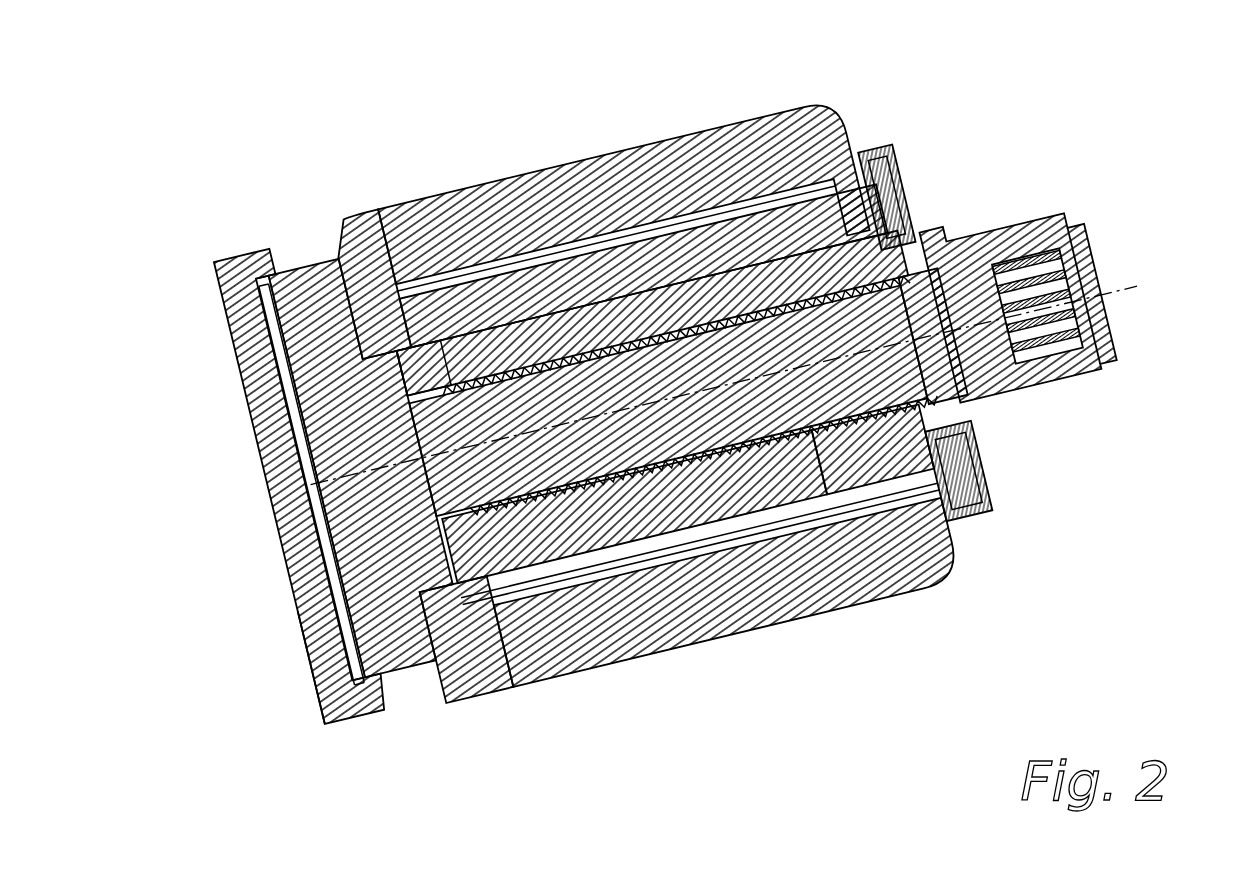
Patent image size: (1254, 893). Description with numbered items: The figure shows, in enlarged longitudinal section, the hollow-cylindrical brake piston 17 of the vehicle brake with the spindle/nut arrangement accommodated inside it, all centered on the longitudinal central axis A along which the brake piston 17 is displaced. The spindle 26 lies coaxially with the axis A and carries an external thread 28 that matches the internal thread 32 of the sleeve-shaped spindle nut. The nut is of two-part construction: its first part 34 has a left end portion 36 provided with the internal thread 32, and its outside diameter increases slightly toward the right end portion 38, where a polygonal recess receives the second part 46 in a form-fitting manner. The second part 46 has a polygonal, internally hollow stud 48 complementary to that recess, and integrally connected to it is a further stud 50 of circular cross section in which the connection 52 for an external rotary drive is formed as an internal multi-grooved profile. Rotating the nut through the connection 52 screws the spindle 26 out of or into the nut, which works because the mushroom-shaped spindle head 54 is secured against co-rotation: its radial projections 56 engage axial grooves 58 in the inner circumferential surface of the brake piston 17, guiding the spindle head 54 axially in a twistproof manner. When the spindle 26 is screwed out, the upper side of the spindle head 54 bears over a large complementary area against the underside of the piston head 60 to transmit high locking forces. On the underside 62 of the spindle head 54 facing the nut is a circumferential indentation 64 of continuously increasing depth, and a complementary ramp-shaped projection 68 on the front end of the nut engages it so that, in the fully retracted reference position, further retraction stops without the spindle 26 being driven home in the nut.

The brake piston 17 is at (688, 165).
The spindle 26 is at (605, 440).
The external thread 28 is at (640, 335).
The internal thread 32 is at (515, 378).
The first part 34 is at (710, 490).
The end portion 36 is at (445, 370).
The end portion 38 is at (800, 247).
The second part 46 is at (973, 390).
The polygonal stud 48 is at (847, 447).
The stud 50 is at (988, 250).
The connection for an external rotary drive 52 is at (1083, 277).
The spindle head 54 is at (410, 545).
The radial projections 56 is at (453, 627).
The axial grooves 58 is at (520, 600).
The head 60 is at (290, 468).
The underside 62 is at (310, 373).
The indentation 64 is at (400, 375).
The projection 68 is at (335, 640).
The longitudinal central axis A is at (1130, 292).